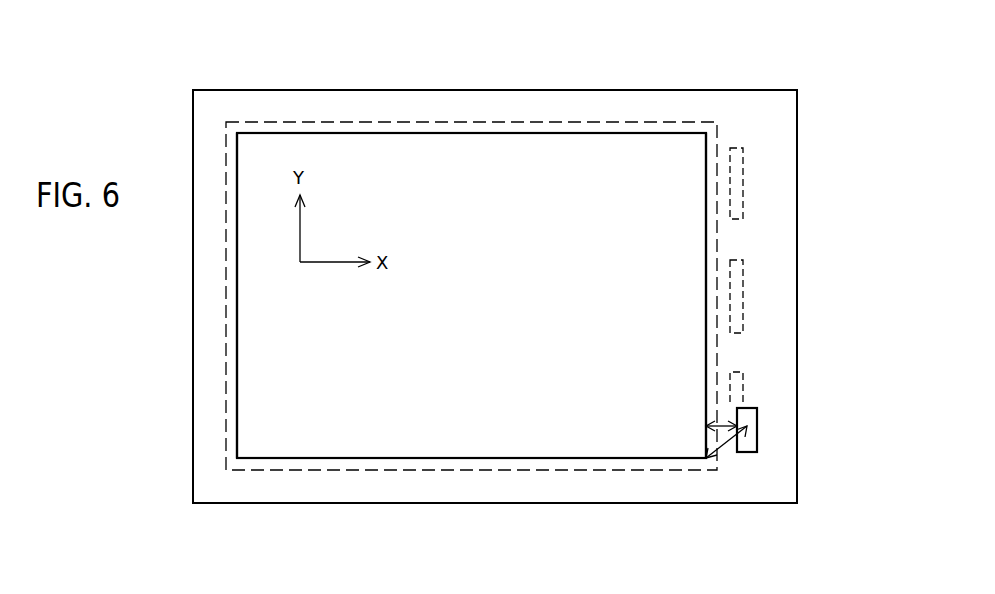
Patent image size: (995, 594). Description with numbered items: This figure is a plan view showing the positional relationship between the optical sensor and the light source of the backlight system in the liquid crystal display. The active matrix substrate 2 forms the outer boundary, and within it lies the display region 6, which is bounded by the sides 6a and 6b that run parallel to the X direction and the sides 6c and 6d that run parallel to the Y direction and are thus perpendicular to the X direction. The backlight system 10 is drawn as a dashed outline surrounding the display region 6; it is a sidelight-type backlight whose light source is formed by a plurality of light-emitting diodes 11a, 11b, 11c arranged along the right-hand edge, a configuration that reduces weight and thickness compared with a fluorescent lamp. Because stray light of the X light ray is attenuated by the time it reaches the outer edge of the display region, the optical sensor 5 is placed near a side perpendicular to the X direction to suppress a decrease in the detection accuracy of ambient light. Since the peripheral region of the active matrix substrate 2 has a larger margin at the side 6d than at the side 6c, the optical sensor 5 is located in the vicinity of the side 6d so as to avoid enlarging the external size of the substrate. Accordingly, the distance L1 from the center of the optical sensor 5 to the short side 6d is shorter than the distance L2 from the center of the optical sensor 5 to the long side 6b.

The active matrix substrate 2 is at (797, 112).
The optical sensor 5 is at (758, 426).
The display region 6 is at (443, 130).
The side of the display region parallel to the X direction 6a is at (527, 132).
The side of the display region parallel to the X direction 6b is at (494, 458).
The side of the display region parallel to the Y direction 6c is at (237, 277).
The side of the display region parallel to the Y direction 6d is at (706, 245).
The backlight system 10 is at (343, 117).
The light-emitting diode 11a is at (743, 383).
The light-emitting diode 11b is at (743, 290).
The light-emitting diode 11c is at (743, 178).
The distance L1 is at (718, 426).
The distance L2 is at (716, 450).